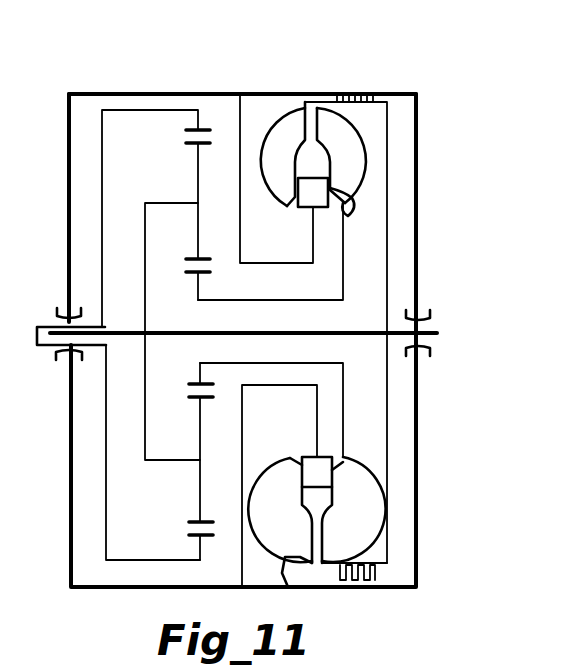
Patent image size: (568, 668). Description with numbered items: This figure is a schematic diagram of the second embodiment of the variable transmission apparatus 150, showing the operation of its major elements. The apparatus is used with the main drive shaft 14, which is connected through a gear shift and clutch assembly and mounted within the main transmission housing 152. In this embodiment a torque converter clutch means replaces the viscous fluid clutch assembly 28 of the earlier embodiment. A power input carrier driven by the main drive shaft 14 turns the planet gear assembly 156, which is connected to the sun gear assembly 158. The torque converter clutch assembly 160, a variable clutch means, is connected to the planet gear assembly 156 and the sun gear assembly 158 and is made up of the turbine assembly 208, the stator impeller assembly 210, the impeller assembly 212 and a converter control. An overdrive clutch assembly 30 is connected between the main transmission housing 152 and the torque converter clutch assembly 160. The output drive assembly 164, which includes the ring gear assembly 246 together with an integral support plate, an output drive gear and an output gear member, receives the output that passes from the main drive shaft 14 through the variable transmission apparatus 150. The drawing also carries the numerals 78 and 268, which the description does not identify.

The main drive shaft 14 is at (60, 327).
The viscous fluid clutch assembly 28 is at (0, 152).
The overdrive clutch assembly 30 is at (335, 92).
The member 78 is at (14, 430).
The variable transmission apparatus 150 is at (352, 82).
The main transmission housing 152 is at (82, 92).
The planet gear assembly 156 is at (198, 177).
The sun gear assembly 158 is at (219, 303).
The torque converter clutch assembly 160 is at (399, 108).
The output drive assembly 164 is at (106, 497).
The turbine assembly 208 is at (340, 206).
The stator impeller assembly 210 is at (250, 363).
The impeller assembly 212 is at (285, 588).
The ring gear assembly 246 is at (199, 127).
The bearing bracket 268 is at (0, 258).